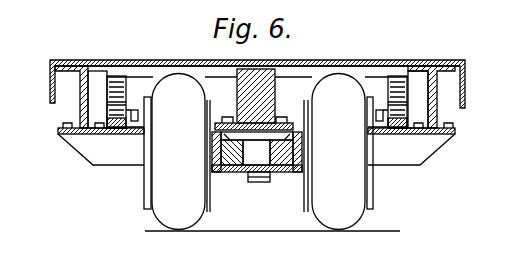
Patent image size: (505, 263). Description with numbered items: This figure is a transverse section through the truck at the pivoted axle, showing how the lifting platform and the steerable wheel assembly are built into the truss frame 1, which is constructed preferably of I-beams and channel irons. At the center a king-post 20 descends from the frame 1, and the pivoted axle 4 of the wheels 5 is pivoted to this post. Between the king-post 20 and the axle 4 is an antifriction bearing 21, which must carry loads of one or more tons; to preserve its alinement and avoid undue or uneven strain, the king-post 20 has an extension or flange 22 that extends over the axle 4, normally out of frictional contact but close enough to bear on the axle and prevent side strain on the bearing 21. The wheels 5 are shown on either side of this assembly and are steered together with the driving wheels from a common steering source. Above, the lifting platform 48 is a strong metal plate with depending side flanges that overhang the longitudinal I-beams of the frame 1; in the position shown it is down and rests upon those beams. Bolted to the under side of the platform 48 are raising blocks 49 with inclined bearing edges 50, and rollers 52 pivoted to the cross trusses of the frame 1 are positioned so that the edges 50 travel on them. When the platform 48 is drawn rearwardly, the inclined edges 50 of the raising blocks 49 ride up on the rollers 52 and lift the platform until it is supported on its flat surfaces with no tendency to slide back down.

The truss frame 1 is at (76, 107).
The lifting platform 48 is at (116, 61).
The raising blocks 49 is at (171, 62).
The inclined bearing edges 50 is at (123, 91).
The rollers 52 is at (114, 134).
The wheels 5 is at (258, 152).
The king-post 20 is at (270, 98).
The extension or flange 22 is at (217, 126).
The pivoted axle 4 is at (238, 172).
The antifriction bearing 21 is at (272, 172).